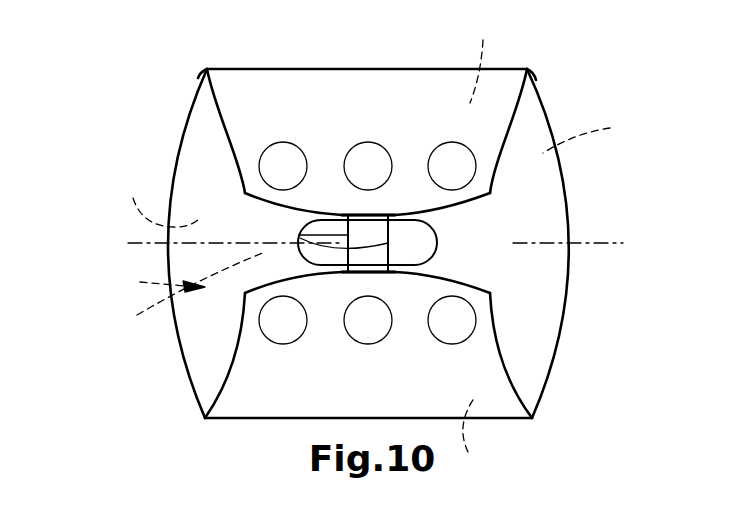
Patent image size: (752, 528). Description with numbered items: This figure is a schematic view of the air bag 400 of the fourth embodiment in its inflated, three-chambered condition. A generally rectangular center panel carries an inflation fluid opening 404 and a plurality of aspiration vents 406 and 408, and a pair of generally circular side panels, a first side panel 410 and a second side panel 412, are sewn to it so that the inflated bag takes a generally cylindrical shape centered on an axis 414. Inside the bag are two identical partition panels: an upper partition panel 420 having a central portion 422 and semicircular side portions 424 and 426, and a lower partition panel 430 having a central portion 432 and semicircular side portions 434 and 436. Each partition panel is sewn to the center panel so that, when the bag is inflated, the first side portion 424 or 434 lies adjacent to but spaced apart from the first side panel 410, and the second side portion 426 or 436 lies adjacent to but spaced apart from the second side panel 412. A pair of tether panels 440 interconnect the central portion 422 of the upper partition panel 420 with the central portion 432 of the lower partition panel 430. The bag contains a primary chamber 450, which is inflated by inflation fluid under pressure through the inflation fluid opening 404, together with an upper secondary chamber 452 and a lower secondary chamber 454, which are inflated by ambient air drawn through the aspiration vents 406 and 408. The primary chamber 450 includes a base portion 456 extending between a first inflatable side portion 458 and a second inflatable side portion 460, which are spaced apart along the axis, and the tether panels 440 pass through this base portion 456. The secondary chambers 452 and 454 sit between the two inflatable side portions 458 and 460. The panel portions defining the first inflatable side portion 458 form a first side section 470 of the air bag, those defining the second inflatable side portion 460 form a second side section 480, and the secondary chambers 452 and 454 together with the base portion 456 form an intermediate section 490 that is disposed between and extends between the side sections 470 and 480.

The air bag 400 is at (280, 452).
The inflation fluid opening 404 is at (438, 243).
The aspiration vents 406 is at (303, 147).
The aspiration vents 408 is at (303, 336).
The first side panel 410 is at (173, 310).
The second side panel 412 is at (568, 300).
The axis 414 is at (135, 243).
The upper partition panel 420 is at (431, 145).
The central portion 422 is at (443, 206).
The first side portion 424 is at (233, 132).
The second side portion 426 is at (500, 140).
The lower partition panel 430 is at (434, 321).
The central portion 432 is at (447, 280).
The first side portion 434 is at (230, 370).
The second side portion 436 is at (512, 377).
The tether panels 440 is at (300, 240).
The primary chamber 450 is at (179, 292).
The upper secondary chamber 452 is at (485, 58).
The lower secondary chamber 454 is at (483, 434).
The base portion 456 is at (153, 283).
The first inflatable side portion 458 is at (155, 201).
The second inflatable side portion 460 is at (595, 134).
The first side section 470 is at (198, 70).
The second side section 480 is at (550, 83).
The intermediate section 490 is at (432, 66).